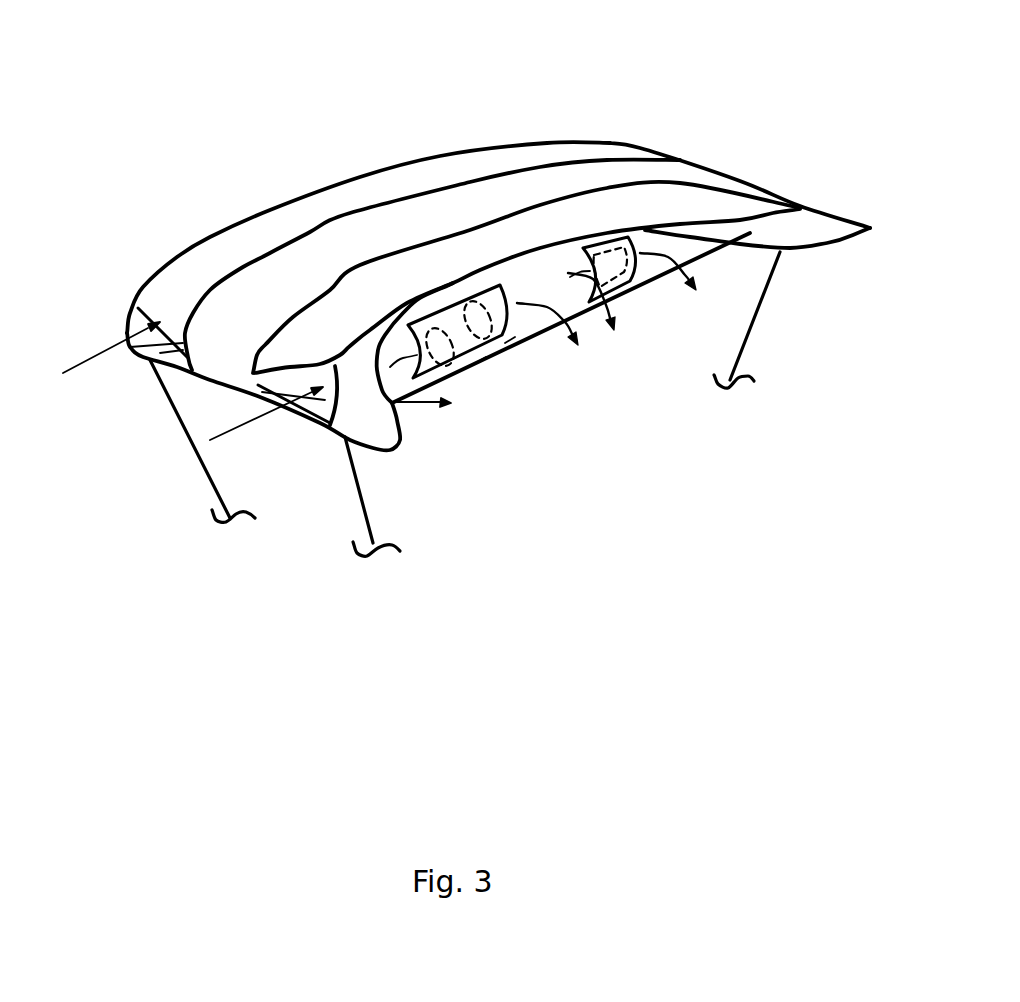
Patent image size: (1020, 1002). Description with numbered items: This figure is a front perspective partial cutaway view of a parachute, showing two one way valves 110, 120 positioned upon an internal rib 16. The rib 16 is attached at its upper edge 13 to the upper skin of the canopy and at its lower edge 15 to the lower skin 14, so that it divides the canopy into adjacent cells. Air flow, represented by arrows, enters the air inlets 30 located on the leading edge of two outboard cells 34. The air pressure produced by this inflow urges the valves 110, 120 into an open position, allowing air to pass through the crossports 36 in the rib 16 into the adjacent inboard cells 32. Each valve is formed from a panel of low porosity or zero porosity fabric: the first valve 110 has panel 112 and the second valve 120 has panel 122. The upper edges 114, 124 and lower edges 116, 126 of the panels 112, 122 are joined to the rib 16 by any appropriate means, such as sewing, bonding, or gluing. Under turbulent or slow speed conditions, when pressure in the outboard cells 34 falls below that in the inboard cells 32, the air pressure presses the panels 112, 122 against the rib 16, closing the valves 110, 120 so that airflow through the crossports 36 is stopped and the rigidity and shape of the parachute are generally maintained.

The upper edge 13 is at (553, 250).
The lower skin 14 is at (153, 360).
The lower edge 15 is at (548, 355).
The internal rib 16 is at (521, 272).
The air inlet 30 is at (163, 310).
The inboard cell 32 is at (757, 245).
The outboard cell 34 is at (208, 292).
The crossport 36 is at (411, 321).
The one way valve 110 is at (628, 290).
The panel 112 is at (625, 283).
The upper edge 114 is at (627, 237).
The lower edge 116 is at (623, 287).
The one way valve 120 is at (480, 358).
The panel 122 is at (515, 337).
The upper edge 124 is at (450, 303).
The lower edge 126 is at (460, 380).